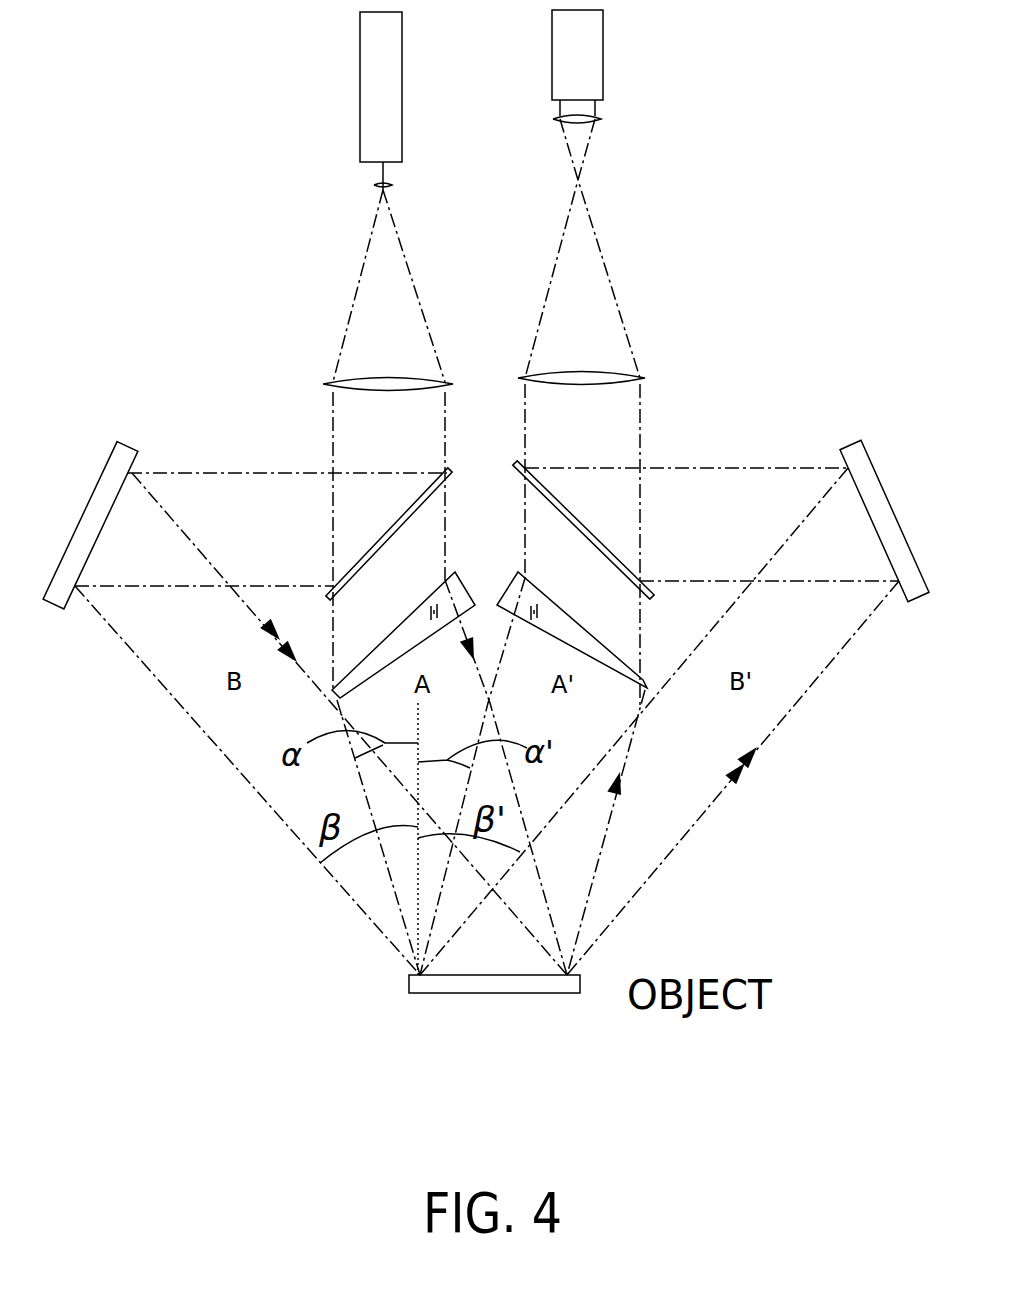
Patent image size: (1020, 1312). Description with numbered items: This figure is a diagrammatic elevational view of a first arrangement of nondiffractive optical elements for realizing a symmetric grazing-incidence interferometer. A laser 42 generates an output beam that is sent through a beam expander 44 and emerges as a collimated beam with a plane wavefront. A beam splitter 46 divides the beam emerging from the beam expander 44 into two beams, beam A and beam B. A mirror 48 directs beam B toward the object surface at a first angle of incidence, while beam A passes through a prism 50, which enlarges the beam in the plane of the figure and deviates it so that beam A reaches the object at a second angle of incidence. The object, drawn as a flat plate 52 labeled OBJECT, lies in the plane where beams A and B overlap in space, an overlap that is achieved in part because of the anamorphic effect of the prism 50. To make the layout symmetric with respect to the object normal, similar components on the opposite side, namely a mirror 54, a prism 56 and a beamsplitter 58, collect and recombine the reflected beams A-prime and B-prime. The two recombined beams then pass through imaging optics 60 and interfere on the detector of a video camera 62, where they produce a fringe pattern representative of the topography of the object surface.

The laser 42 is at (360, 75).
The beam expander 44 is at (352, 378).
The beam splitter 46 is at (425, 492).
The mirror 48 is at (105, 462).
The prism 50 is at (425, 600).
The object 52 is at (436, 994).
The mirror 54 is at (882, 483).
The prism 56 is at (600, 635).
The beamsplitter 58 is at (558, 500).
The imaging optics 60 is at (622, 372).
The video camera 62 is at (604, 60).